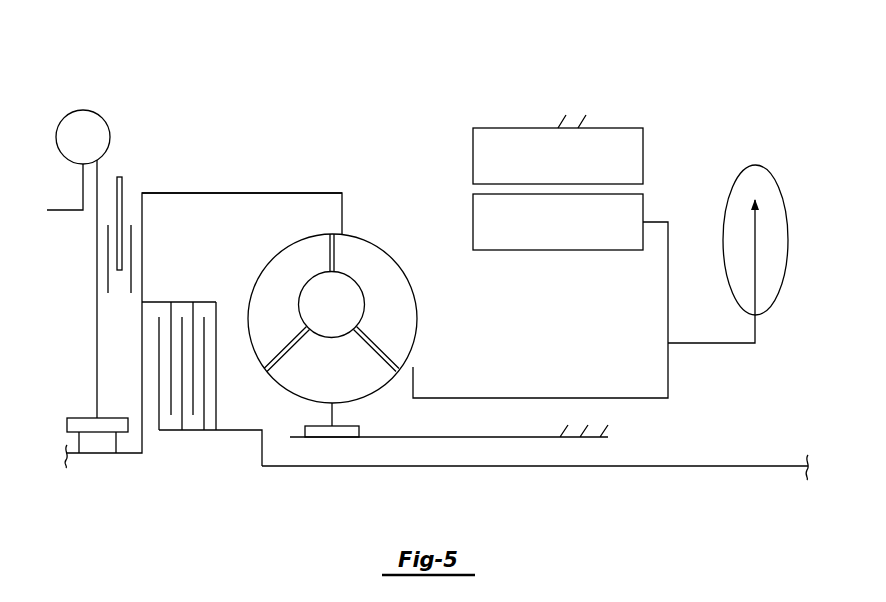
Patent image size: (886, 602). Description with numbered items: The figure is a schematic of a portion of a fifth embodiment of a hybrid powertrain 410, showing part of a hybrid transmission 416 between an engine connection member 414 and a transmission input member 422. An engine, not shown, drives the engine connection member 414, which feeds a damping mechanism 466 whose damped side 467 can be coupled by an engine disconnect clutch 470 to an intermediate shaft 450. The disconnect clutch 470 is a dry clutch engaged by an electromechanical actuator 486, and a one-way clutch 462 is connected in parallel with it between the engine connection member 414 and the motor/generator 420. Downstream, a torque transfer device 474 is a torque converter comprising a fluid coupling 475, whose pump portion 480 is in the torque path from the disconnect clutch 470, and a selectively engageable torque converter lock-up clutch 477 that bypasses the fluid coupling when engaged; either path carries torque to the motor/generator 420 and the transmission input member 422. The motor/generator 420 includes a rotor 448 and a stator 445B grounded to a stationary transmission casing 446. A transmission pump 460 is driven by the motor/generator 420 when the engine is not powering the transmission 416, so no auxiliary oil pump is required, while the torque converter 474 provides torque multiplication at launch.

The hybrid powertrain 410 is at (597, 62).
The engine connection member 414 is at (62, 212).
The hybrid transmission 416 is at (373, 126).
The motor/generator 420 is at (666, 165).
The transmission input member 422 is at (750, 467).
The sensor 445B is at (570, 167).
The transmission casing 446 is at (542, 127).
The rotor 448 is at (570, 233).
The intermediate shaft 450 is at (261, 193).
The transmission pump 460 is at (782, 192).
The one-way clutch 462 is at (61, 436).
The damping mechanism 466 is at (71, 100).
The damped side 467 is at (97, 320).
The engine disconnect clutch 470 is at (137, 181).
The torque transfer device 474 is at (378, 207).
The fluid coupling 475 is at (402, 238).
The torque converter lock-up clutch 477 is at (190, 289).
The pump portion 480 is at (417, 305).
The electromechanical actuator 486 is at (113, 183).